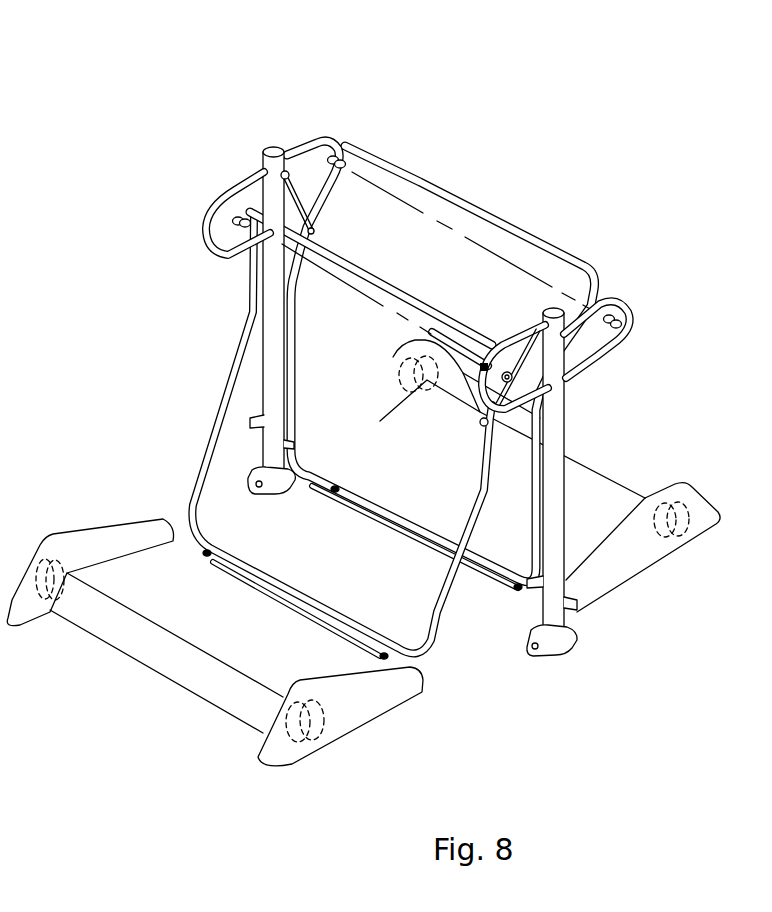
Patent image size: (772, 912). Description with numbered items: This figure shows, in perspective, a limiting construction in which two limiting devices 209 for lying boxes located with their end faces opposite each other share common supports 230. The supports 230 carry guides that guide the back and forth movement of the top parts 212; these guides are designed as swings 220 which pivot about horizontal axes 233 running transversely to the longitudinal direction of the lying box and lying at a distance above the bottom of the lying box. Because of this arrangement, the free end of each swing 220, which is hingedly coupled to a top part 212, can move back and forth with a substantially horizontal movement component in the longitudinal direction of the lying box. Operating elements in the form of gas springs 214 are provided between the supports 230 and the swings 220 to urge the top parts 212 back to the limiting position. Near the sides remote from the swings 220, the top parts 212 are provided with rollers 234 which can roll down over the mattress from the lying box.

The limiting device 209 is at (516, 182).
The top part 212 is at (110, 523).
The gas spring 214 is at (518, 355).
The swing 220 is at (221, 393).
The support 230 is at (297, 150).
The horizontal axis 233 is at (233, 230).
The roller 234 is at (50, 562).